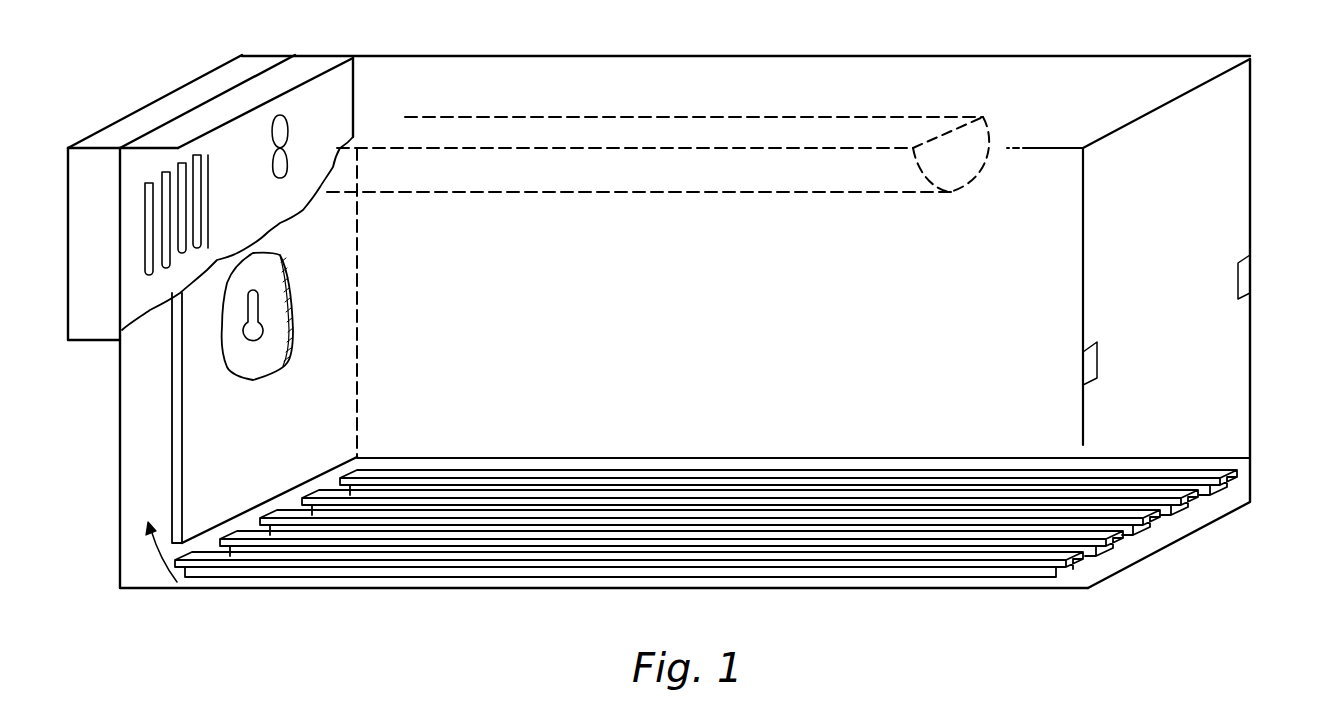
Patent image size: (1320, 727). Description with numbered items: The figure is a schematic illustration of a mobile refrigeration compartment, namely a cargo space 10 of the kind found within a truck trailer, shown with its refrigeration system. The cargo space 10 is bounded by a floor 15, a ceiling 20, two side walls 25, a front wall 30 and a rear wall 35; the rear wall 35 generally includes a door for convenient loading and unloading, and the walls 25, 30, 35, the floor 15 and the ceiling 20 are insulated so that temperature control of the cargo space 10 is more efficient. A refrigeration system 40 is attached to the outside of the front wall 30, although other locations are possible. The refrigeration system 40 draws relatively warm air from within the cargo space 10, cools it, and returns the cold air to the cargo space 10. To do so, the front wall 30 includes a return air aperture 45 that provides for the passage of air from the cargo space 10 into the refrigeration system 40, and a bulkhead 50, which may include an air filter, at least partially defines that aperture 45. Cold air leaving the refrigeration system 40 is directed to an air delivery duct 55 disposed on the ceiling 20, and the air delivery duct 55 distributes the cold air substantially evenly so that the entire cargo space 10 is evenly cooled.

The cargo space 10 is at (1220, 157).
The floor 15 is at (772, 497).
The ceiling 20 is at (1077, 67).
The side walls 25 is at (700, 290).
The front wall 30 is at (132, 419).
The rear wall 35 is at (1205, 346).
The refrigeration system 40 is at (212, 80).
The return air aperture 45 is at (164, 557).
The bulkhead 50 is at (333, 403).
The air delivery duct 55 is at (868, 180).